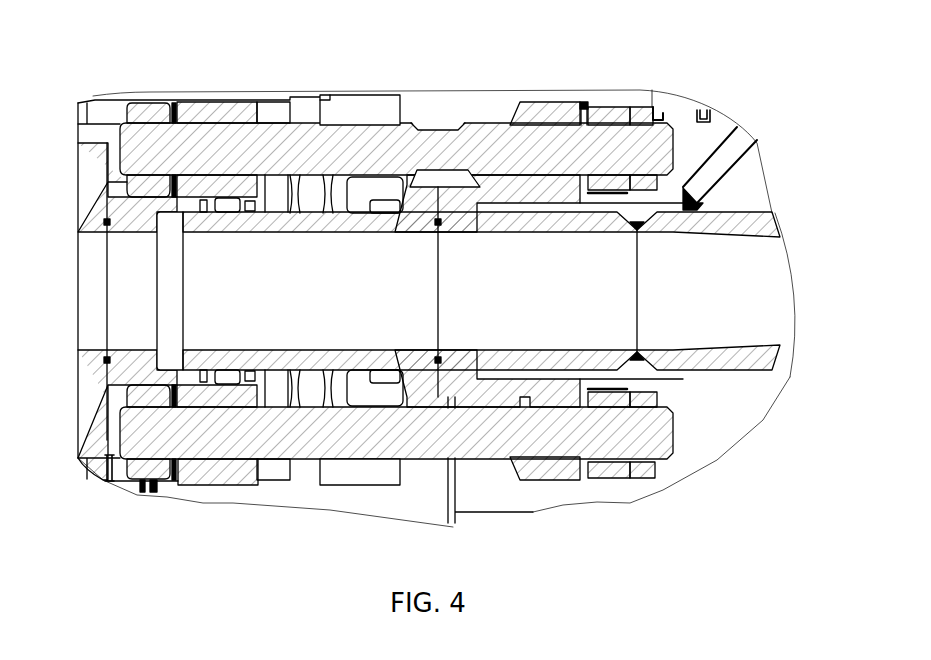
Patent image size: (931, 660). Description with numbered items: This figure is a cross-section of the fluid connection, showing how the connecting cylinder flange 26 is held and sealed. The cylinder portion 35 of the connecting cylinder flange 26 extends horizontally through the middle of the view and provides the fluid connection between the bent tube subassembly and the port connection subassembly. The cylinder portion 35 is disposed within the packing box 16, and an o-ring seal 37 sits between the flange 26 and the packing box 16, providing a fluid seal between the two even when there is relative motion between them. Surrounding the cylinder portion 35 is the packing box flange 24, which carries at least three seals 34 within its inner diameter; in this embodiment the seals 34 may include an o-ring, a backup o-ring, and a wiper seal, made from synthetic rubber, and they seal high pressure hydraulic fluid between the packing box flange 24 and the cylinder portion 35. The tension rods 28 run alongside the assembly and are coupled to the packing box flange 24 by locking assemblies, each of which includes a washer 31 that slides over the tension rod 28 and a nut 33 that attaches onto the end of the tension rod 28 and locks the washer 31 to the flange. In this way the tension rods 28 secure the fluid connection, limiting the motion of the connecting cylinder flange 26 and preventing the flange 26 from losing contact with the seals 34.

The packing box 16 is at (493, 190).
The packing box flange 24 is at (233, 108).
The connecting cylinder flange 26 is at (422, 392).
The tension rod 28 is at (466, 127).
The washer 31 is at (583, 105).
The nut 33 is at (615, 112).
The seal 34 is at (223, 396).
The cylinder portion 35 is at (340, 322).
The o-ring seal 37 is at (443, 360).